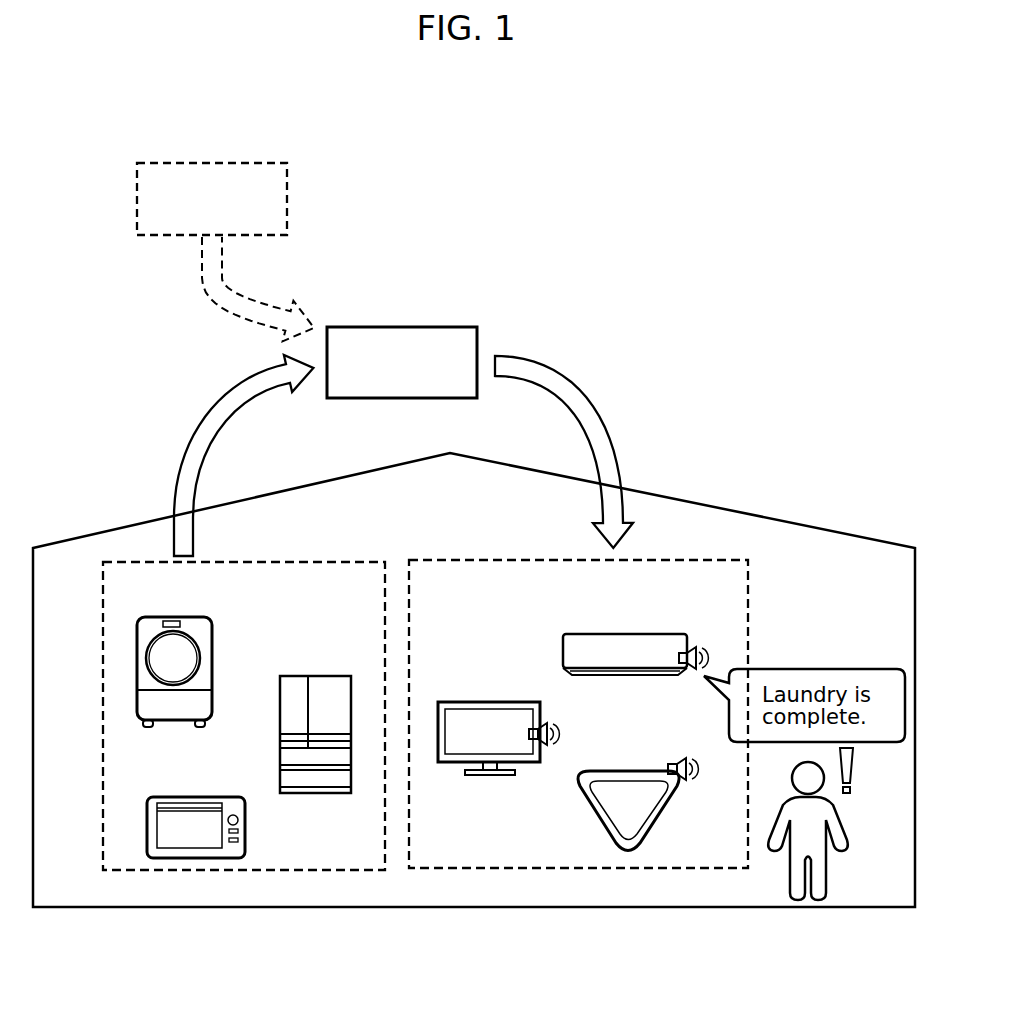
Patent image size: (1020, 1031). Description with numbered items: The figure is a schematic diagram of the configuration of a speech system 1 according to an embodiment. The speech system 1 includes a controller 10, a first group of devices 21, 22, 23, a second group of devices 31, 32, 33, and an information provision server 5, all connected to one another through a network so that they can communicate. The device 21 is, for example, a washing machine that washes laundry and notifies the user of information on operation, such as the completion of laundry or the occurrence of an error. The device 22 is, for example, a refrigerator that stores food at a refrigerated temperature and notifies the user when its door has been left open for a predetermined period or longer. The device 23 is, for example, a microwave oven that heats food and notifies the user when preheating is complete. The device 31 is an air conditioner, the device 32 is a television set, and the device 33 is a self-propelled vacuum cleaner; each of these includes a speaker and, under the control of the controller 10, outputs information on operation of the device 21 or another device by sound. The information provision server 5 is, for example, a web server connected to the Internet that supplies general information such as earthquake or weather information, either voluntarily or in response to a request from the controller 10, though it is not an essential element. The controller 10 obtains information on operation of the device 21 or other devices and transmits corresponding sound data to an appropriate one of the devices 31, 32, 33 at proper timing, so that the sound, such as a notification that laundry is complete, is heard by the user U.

The speech system 1 is at (764, 291).
The information provision server 5 is at (227, 163).
The controller 10 is at (420, 327).
The device 21 is at (182, 617).
The device 22 is at (318, 676).
The device 23 is at (205, 797).
The device 31 is at (641, 634).
The device 32 is at (490, 702).
The device 33 is at (628, 770).
The user U is at (837, 812).